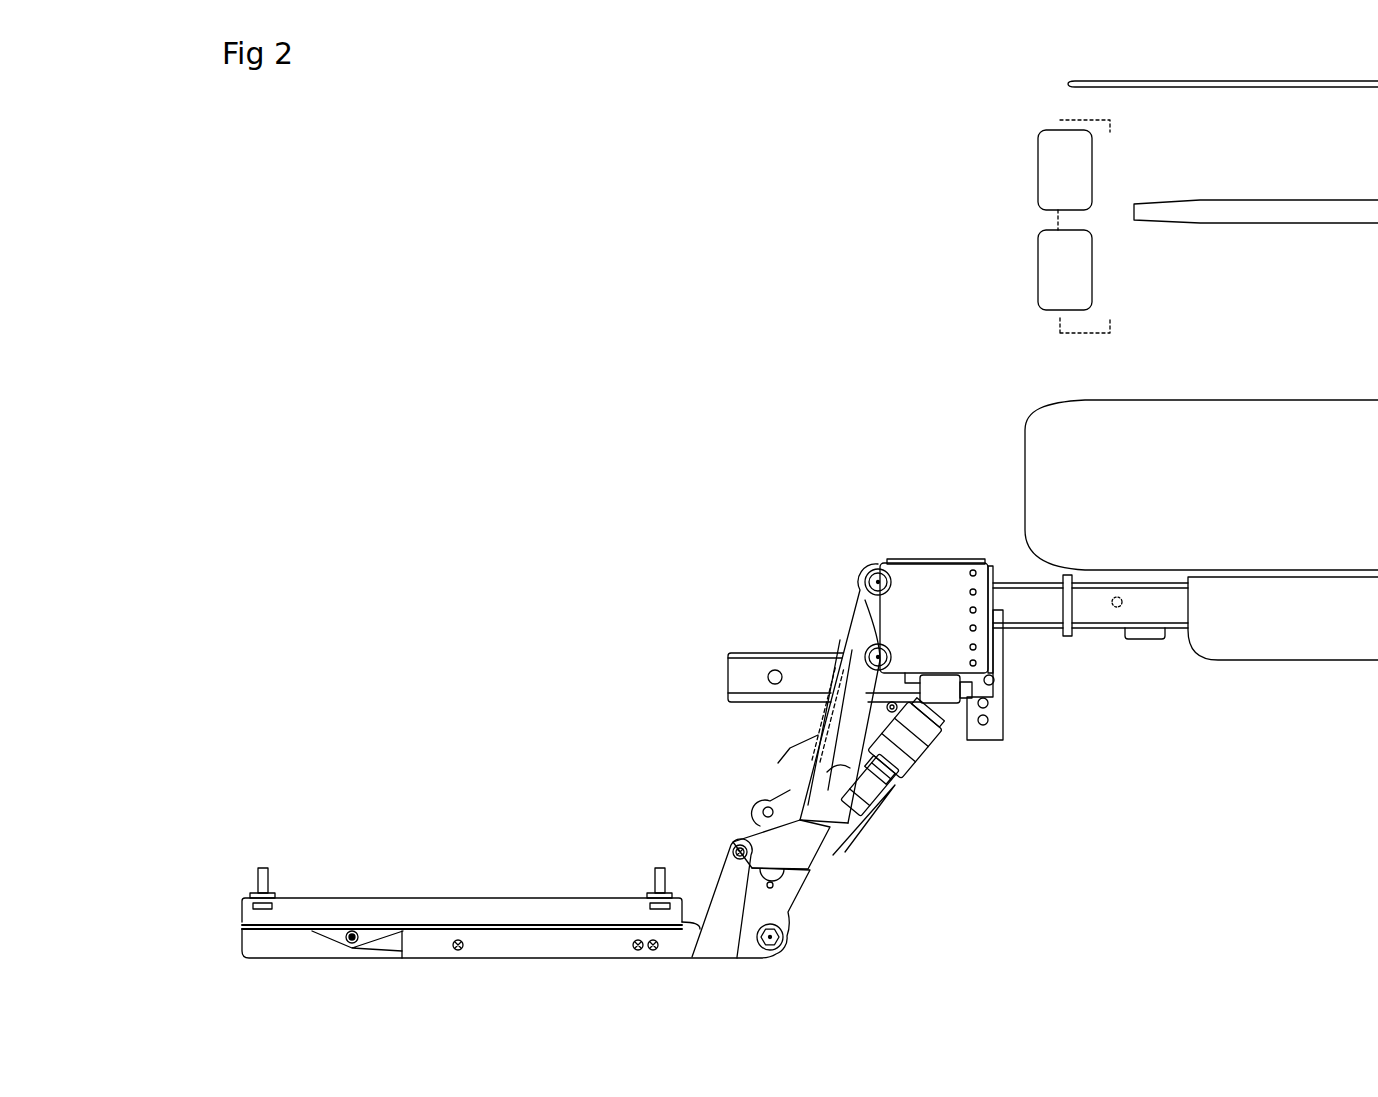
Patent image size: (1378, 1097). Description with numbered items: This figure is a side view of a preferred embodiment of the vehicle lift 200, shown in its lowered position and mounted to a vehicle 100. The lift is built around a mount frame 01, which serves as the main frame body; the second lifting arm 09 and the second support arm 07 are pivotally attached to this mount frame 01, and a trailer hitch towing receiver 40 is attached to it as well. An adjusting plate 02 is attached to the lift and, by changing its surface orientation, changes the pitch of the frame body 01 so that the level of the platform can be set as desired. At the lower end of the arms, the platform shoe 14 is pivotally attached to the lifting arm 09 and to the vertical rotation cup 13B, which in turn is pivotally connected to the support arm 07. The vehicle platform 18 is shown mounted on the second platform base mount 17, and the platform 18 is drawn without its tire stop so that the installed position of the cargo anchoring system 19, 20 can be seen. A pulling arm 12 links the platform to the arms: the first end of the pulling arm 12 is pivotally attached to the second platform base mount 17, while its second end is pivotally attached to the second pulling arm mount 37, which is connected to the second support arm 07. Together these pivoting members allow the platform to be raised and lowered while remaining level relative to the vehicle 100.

The vehicle 100 is at (1063, 103).
The vehicle lift 200 is at (556, 403).
The mount frame 01 is at (920, 582).
The adjusting plate 02 is at (1002, 660).
The second support arm 07 is at (850, 751).
The second lifting arm 09 is at (806, 772).
The pulling arm 12 is at (707, 911).
The vertical rotation cup 13B is at (775, 918).
The platform shoe 14 is at (750, 893).
The second platform base mount 17 is at (283, 941).
The vehicle platform 18 is at (414, 903).
The cargo anchoring system 19 is at (259, 905).
The cargo anchoring system 20 is at (263, 878).
The second pulling arm mount 37 is at (793, 851).
The trailer hitch towing receiver 40 is at (742, 670).